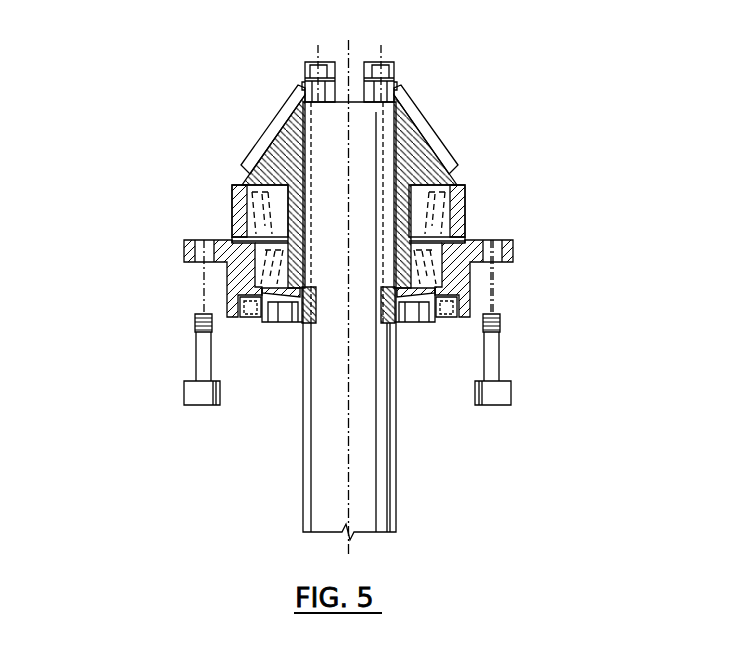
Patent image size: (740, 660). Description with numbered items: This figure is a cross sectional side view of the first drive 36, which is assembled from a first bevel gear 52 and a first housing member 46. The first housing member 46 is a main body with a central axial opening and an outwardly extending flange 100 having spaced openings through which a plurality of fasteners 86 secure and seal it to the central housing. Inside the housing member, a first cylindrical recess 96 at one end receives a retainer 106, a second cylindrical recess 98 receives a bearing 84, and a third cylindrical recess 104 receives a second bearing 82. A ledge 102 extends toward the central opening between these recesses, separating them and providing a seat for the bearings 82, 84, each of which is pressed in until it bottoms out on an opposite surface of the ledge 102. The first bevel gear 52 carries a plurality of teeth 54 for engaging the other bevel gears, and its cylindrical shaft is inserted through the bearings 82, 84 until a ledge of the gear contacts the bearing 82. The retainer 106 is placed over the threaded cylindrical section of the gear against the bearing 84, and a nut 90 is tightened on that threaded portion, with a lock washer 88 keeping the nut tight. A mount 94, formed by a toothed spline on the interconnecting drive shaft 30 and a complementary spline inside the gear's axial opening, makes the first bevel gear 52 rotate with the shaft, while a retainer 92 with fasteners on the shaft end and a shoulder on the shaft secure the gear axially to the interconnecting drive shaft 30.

The interconnecting drive shaft 30 is at (398, 500).
The first drive 36 is at (440, 51).
The first housing member 46 is at (492, 241).
The first bevel gear 52 is at (454, 178).
The teeth 54 is at (437, 130).
The second bearing 82 is at (464, 212).
The bearing 84 is at (440, 268).
The fasteners 86 is at (185, 396).
The lock washer 88 is at (440, 320).
The nut 90 is at (414, 328).
The retainer 92 is at (327, 62).
The mount 94 is at (308, 130).
The first cylindrical recess 96 is at (242, 320).
The second cylindrical recess 98 is at (258, 284).
The outwardly extending flange 100 is at (184, 248).
The ledge 102 is at (258, 238).
The third cylindrical recess 104 is at (232, 192).
The retainer 106 is at (263, 330).